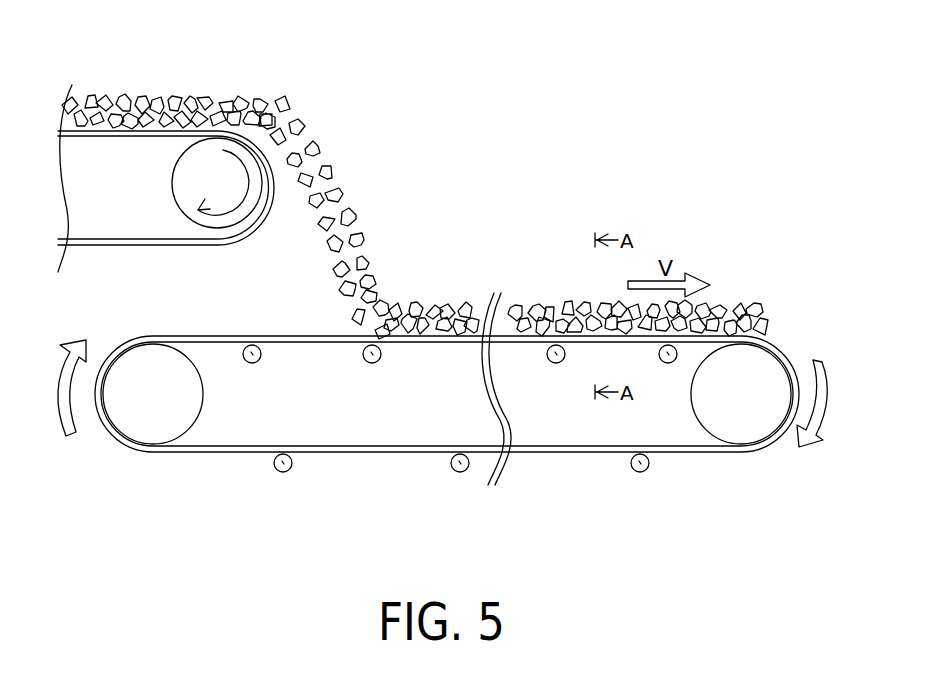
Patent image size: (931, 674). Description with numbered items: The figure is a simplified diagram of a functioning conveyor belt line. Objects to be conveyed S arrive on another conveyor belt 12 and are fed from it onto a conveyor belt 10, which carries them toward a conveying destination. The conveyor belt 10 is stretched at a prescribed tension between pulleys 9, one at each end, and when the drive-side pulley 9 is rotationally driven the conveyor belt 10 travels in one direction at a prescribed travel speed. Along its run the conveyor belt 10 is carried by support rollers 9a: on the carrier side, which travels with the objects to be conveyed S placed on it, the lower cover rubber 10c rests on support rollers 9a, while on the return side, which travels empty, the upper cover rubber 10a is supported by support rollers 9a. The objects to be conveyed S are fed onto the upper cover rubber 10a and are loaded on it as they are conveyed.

The another conveyor belt 12 is at (253, 83).
The conveyor belt 10 is at (442, 391).
The upper cover rubber 10a is at (220, 334).
The lower cover rubber 10c is at (313, 345).
The pulley 9 is at (149, 430).
The support roller 9a is at (252, 363).
The objects to be conveyed S is at (322, 165).